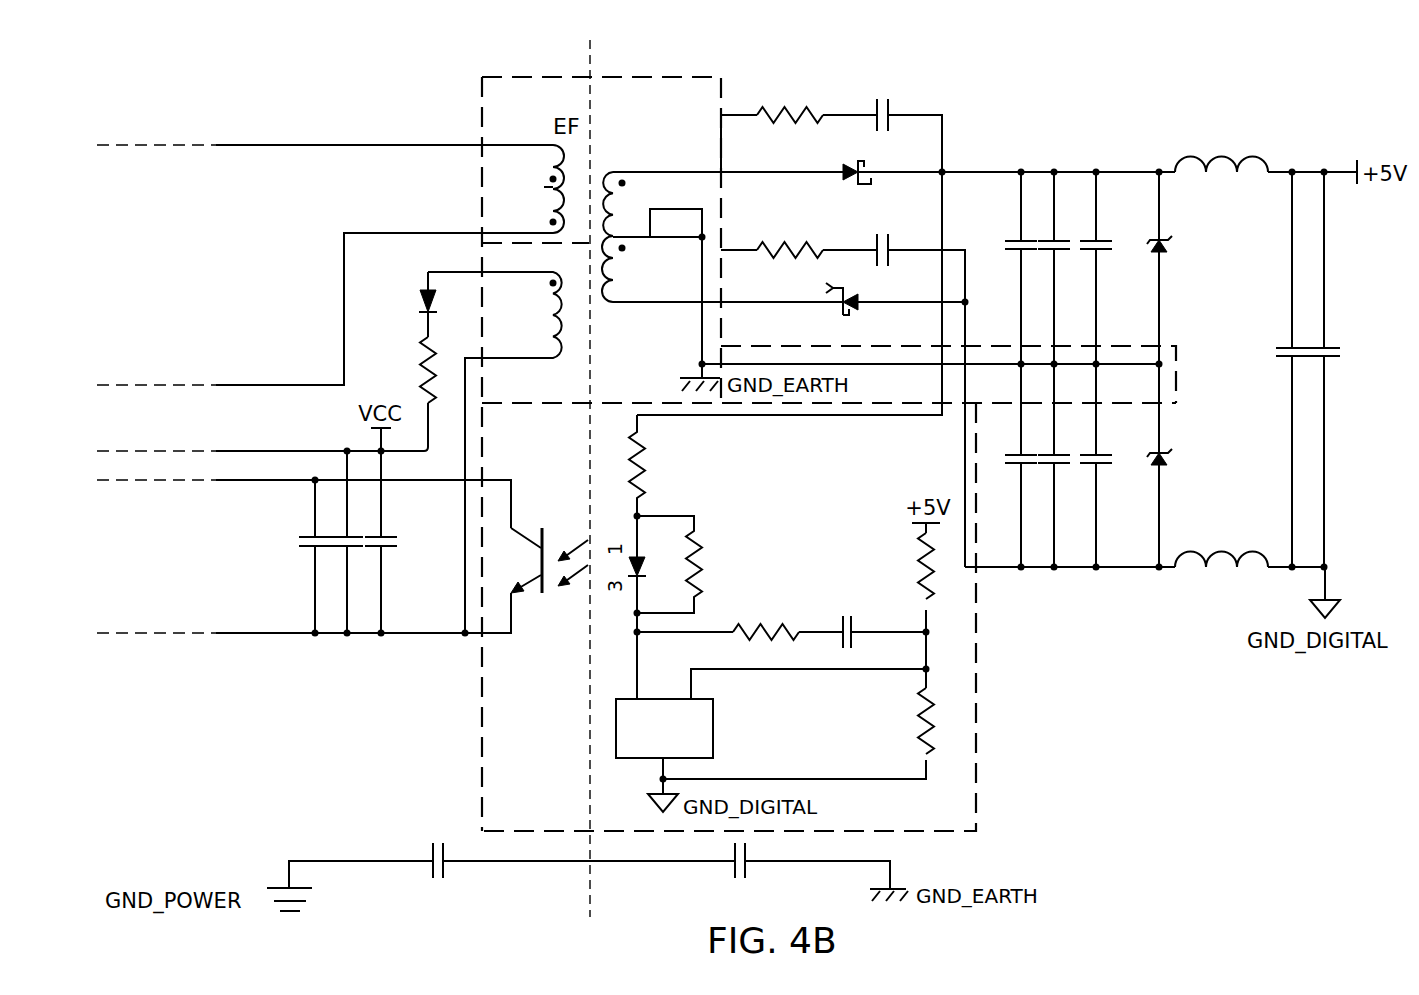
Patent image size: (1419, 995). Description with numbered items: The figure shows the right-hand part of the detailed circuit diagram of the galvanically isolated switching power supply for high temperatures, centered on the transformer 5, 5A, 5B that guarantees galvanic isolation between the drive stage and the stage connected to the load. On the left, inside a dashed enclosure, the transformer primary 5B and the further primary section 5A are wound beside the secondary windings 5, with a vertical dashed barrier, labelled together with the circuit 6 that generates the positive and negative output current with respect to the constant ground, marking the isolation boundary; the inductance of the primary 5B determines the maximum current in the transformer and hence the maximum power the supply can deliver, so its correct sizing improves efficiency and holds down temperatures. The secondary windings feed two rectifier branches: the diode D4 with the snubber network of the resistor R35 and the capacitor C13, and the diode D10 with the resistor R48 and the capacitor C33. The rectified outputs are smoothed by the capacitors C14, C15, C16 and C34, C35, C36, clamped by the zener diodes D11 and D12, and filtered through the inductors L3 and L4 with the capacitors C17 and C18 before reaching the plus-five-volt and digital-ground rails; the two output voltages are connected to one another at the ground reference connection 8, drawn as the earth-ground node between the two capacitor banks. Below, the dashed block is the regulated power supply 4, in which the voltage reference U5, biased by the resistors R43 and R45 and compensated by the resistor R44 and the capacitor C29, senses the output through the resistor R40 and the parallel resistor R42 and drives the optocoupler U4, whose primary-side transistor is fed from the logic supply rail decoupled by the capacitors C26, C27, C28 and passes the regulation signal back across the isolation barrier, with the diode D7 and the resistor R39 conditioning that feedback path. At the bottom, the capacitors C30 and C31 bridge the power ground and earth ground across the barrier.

The power supply 4 is at (729, 617).
The transformer 5 is at (783, 269).
The transformer 5A is at (495, 443).
The transformer primary 5B is at (535, 158).
The square wave generator 6 is at (599, 478).
The ground reference connection 8 is at (948, 374).
The resistor R35 is at (790, 102).
The capacitor C13 is at (881, 103).
The diode D4 is at (845, 174).
The resistor R48 is at (790, 236).
The capacitor C33 is at (881, 237).
The diode D10 is at (835, 306).
The inductor L3 is at (1221, 153).
The inductor L4 is at (1221, 542).
The capacitor C14 is at (1013, 268).
The capacitor C15 is at (1046, 268).
The capacitor C16 is at (1087, 268).
The capacitor C34 is at (1013, 467).
The capacitor C35 is at (1046, 467).
The capacitor C36 is at (1087, 467).
The zener diode D11 is at (1170, 268).
The zener diode D12 is at (1170, 467).
The capacitor C17 is at (1284, 370).
The capacitor C18 is at (1317, 370).
The diode D7 is at (405, 304).
The resistor R39 is at (409, 370).
The capacitor C26 is at (307, 558).
The capacitor C27 is at (339, 544).
The capacitor C28 is at (373, 544).
The optocoupler U4 is at (535, 576).
The resistor R40 is at (618, 465).
The resistor R42 is at (669, 564).
The resistor R44 is at (766, 618).
The capacitor C29 is at (846, 619).
The resistor R43 is at (910, 566).
The resistor R45 is at (910, 721).
The voltage reference U5 is at (678, 746).
The capacitor C30 is at (439, 874).
The capacitor C31 is at (741, 874).